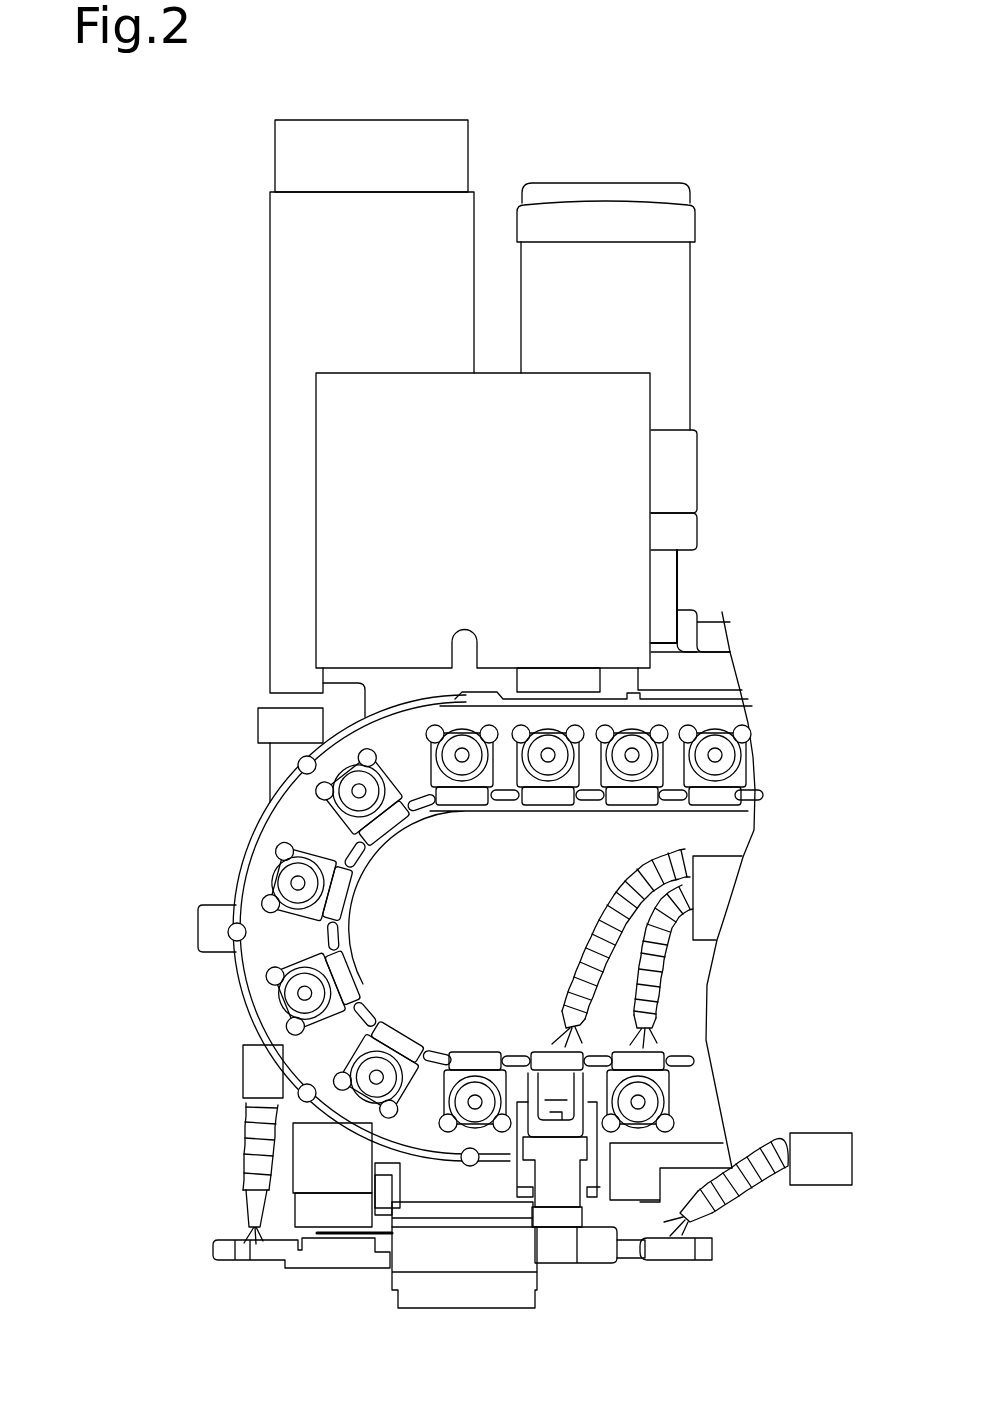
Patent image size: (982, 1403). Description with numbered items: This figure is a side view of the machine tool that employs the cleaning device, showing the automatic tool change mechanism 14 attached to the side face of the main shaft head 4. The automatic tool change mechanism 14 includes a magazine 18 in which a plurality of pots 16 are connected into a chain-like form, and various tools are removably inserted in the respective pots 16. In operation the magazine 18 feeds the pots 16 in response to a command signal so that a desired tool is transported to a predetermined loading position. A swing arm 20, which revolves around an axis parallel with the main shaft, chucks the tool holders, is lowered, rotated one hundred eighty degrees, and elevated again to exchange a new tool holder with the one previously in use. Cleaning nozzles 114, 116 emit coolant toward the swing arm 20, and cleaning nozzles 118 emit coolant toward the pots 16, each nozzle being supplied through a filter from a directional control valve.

The main shaft head 4 is at (260, 727).
The automatic tool change mechanism 14 is at (253, 815).
The pot 16 is at (353, 1055).
The magazine 18 is at (262, 868).
The swing arm 20 is at (555, 1253).
The cleaning nozzle 114 is at (243, 1208).
The cleaning nozzle 116 is at (705, 1223).
The cleaning nozzles 118 is at (571, 1020).